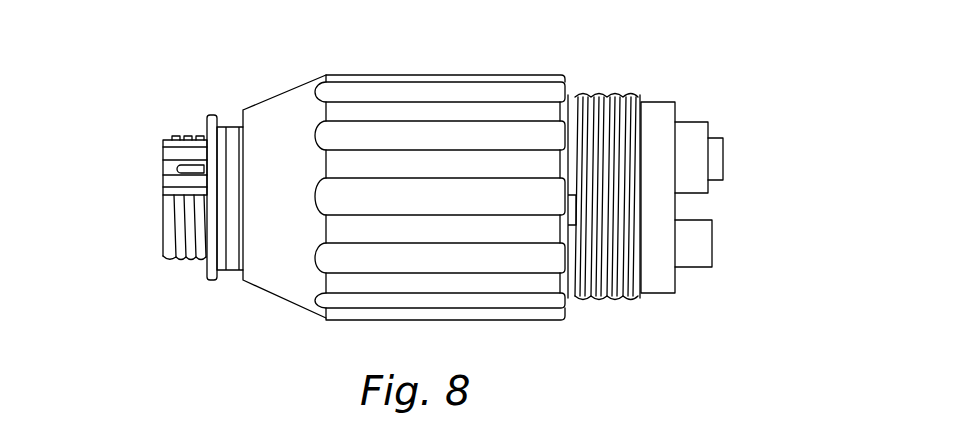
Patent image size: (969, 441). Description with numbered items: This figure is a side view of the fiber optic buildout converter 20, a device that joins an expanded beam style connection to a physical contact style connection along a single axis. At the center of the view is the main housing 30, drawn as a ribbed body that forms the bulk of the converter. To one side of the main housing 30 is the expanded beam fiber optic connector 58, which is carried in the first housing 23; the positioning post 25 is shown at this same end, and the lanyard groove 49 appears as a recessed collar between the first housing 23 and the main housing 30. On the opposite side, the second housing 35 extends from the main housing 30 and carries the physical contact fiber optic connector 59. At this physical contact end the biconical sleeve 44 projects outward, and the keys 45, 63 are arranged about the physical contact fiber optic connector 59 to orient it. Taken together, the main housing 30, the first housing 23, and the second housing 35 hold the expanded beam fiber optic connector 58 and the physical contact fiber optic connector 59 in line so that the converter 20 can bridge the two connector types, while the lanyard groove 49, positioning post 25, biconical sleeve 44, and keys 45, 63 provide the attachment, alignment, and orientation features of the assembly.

The fiber optic buildout converter 20 is at (652, 47).
The first housing 23 is at (166, 136).
The positioning post 25 is at (177, 160).
The main housing 30 is at (357, 75).
The second housing 35 is at (622, 300).
The biconical sleeve 44 is at (718, 140).
The key 45 is at (698, 268).
The lanyard groove 49 is at (232, 273).
The expanded beam fiber optic connector 58 is at (166, 188).
The physical contact fiber optic connector 59 is at (678, 213).
The key 63 is at (697, 122).